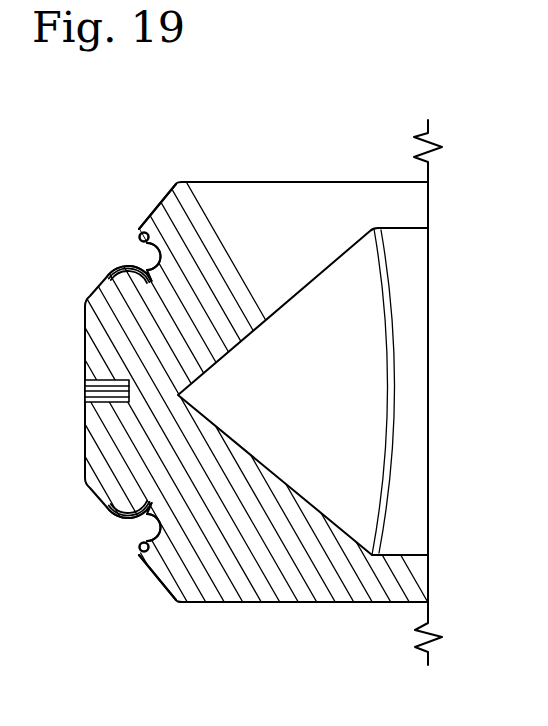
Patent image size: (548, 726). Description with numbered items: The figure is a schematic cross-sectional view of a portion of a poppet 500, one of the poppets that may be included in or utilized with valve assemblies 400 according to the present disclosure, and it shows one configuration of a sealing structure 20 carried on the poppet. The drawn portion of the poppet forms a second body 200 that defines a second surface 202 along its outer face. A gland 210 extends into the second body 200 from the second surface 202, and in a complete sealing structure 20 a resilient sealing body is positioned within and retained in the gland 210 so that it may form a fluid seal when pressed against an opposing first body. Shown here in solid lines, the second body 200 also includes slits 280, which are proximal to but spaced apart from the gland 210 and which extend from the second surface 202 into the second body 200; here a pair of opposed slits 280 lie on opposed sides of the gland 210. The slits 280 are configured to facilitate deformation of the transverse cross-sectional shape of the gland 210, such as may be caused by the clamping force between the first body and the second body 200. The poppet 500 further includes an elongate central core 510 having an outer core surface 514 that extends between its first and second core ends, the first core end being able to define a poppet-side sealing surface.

The valve assembly 400 is at (112, 88).
The sealing structure 20 is at (127, 126).
The second body 200 is at (291, 181).
The second surface 202 is at (157, 186).
The gland 210 is at (121, 253).
The slit 280 is at (139, 234).
The poppet 500 is at (236, 152).
The elongate central core 510 is at (253, 606).
The outer core surface 514 is at (322, 604).